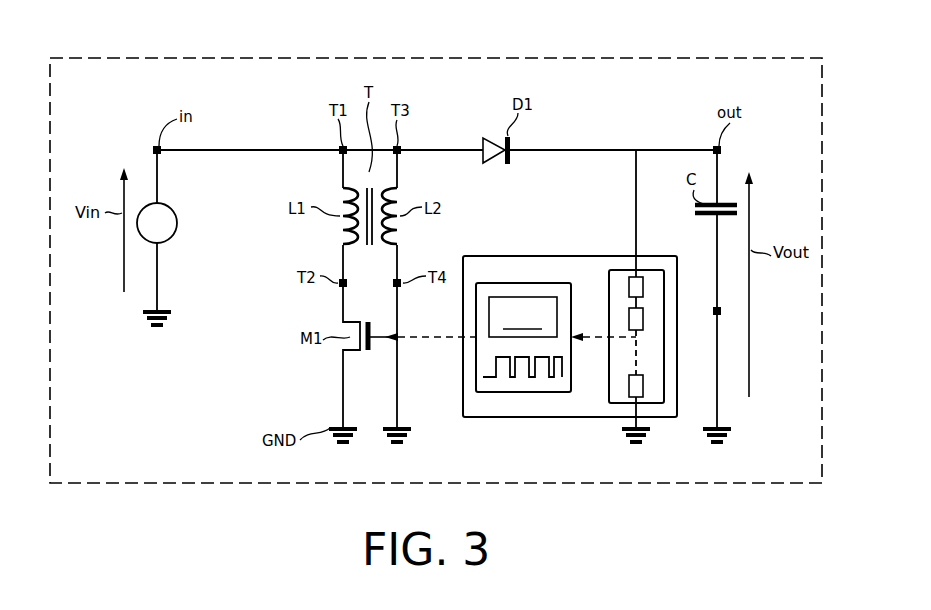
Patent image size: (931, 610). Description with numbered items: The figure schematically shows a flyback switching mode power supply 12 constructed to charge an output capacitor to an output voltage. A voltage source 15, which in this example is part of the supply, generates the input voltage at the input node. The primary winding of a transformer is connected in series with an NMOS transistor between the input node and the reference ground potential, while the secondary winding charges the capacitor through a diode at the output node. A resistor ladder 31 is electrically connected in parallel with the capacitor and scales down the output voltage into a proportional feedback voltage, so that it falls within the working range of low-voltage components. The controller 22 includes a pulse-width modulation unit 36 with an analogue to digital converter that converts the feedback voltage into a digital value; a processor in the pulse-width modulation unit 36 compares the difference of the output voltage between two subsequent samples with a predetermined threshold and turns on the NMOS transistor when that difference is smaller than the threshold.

The flyback switching mode power supply 12 is at (117, 57).
The voltage source 15 is at (177, 219).
The controller 22 is at (578, 256).
The resistor ladder 31 is at (620, 404).
The pulse-width modulation unit 36 is at (520, 393).